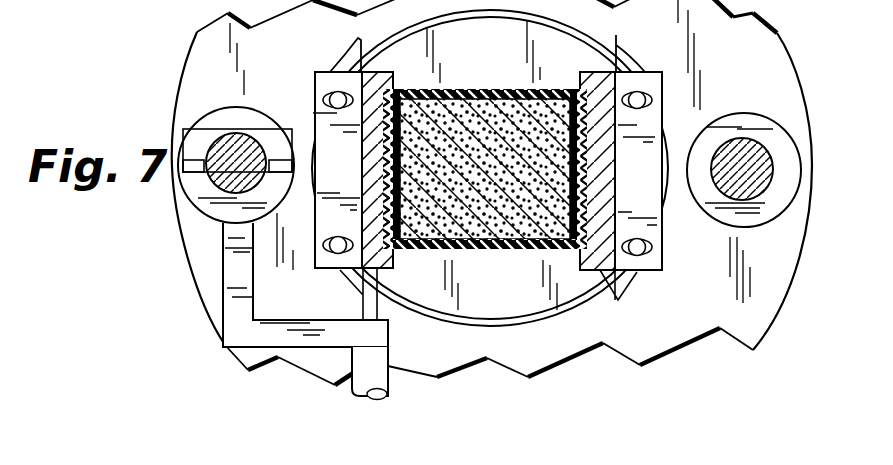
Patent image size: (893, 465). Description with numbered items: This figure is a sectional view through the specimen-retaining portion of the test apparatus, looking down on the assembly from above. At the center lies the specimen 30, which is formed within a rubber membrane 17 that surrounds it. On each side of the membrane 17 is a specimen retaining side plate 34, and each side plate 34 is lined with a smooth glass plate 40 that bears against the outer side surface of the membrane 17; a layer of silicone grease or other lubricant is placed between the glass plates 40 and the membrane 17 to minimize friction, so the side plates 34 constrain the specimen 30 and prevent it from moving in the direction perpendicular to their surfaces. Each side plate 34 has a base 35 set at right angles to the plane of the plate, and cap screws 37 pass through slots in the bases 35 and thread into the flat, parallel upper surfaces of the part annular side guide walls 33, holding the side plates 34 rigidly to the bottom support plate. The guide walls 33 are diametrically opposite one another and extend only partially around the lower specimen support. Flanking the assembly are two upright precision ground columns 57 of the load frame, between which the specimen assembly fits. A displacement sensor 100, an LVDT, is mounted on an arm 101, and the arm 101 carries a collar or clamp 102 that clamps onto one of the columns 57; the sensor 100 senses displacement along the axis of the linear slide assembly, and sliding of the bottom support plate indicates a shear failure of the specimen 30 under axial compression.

The membrane 17 is at (477, 250).
The specimen 30 is at (477, 127).
The part annular side guide wall 33 is at (345, 51).
The specimen retaining side plate 34 is at (610, 275).
The base 35 is at (347, 166).
The cap screw 37 is at (645, 97).
The glass plate 40 is at (405, 84).
The column 57 is at (240, 140).
The displacement sensor 100 is at (378, 375).
The arm 101 is at (260, 319).
The collar 102 is at (207, 123).